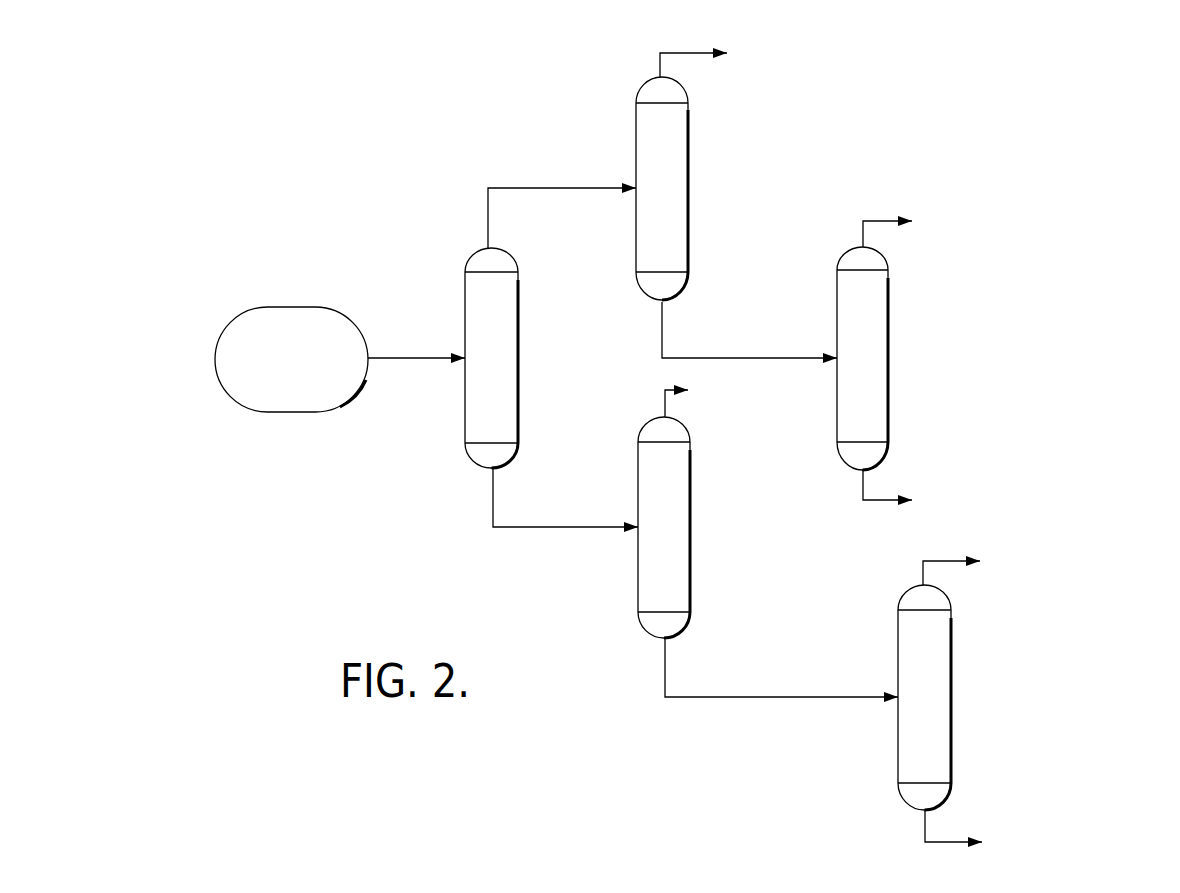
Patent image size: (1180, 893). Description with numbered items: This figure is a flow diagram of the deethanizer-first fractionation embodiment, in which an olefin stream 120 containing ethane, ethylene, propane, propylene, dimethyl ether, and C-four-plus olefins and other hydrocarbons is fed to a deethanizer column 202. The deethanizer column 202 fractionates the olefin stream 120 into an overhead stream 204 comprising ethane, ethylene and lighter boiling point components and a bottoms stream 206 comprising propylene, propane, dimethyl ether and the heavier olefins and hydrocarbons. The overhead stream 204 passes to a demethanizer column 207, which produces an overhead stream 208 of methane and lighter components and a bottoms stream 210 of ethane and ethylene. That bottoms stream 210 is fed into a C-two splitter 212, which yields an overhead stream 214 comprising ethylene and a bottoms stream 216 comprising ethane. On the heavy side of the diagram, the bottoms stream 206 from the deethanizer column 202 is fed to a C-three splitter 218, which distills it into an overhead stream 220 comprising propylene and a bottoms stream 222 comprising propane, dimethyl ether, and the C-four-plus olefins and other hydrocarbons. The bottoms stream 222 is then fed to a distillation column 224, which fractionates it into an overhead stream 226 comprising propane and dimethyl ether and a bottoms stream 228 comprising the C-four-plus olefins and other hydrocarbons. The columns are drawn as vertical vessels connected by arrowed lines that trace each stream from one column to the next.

The olefin stream 120 is at (417, 360).
The deethanizer column 202 is at (491, 358).
The overhead stream 204 is at (550, 187).
The bottoms stream 206 is at (518, 530).
The demethanizer column 207 is at (662, 188).
The overhead stream 208 is at (680, 52).
The bottoms stream 210 is at (697, 357).
The C2 splitter 212 is at (862, 358).
The overhead stream 214 is at (880, 220).
The bottoms stream 216 is at (863, 497).
The C3 splitter 218 is at (664, 527).
The overhead stream 220 is at (662, 408).
The bottoms stream 222 is at (742, 698).
The distillation column 224 is at (924, 697).
The overhead stream 226 is at (923, 575).
The bottoms stream 228 is at (942, 843).